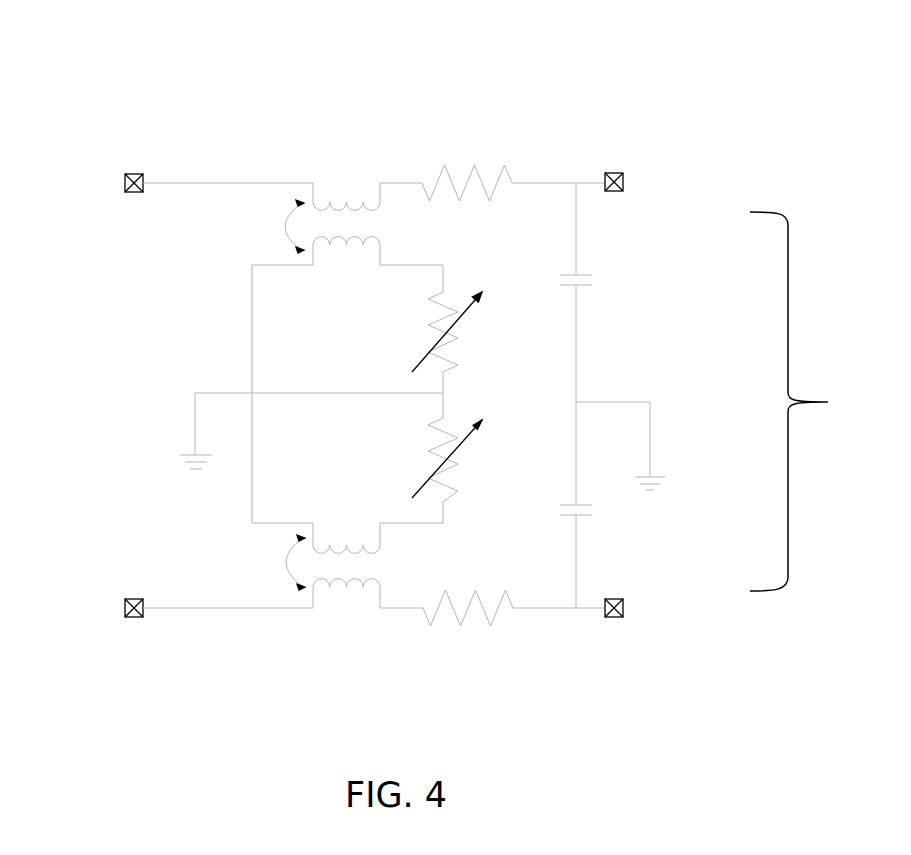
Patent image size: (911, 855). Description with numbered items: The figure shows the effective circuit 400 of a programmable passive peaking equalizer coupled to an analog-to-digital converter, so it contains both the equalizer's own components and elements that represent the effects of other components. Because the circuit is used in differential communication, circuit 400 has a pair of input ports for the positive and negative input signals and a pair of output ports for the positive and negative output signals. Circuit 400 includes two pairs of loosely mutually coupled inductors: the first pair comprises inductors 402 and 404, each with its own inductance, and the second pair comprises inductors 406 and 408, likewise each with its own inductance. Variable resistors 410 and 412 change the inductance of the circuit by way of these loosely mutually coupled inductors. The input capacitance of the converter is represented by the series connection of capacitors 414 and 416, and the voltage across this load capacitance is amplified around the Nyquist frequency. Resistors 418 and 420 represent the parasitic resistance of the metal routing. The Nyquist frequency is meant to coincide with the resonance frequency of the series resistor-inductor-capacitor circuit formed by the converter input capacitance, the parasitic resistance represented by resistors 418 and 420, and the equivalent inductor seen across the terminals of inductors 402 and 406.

The effective circuit 400 is at (726, 92).
The inductor 402 is at (381, 197).
The inductor 404 is at (381, 243).
The inductor 406 is at (382, 592).
The inductor 408 is at (381, 540).
The variable resistor 410 is at (425, 296).
The variable resistor 412 is at (422, 425).
The capacitor 414 is at (588, 268).
The capacitor 416 is at (588, 522).
The resistor 418 is at (514, 160).
The resistor 420 is at (500, 592).